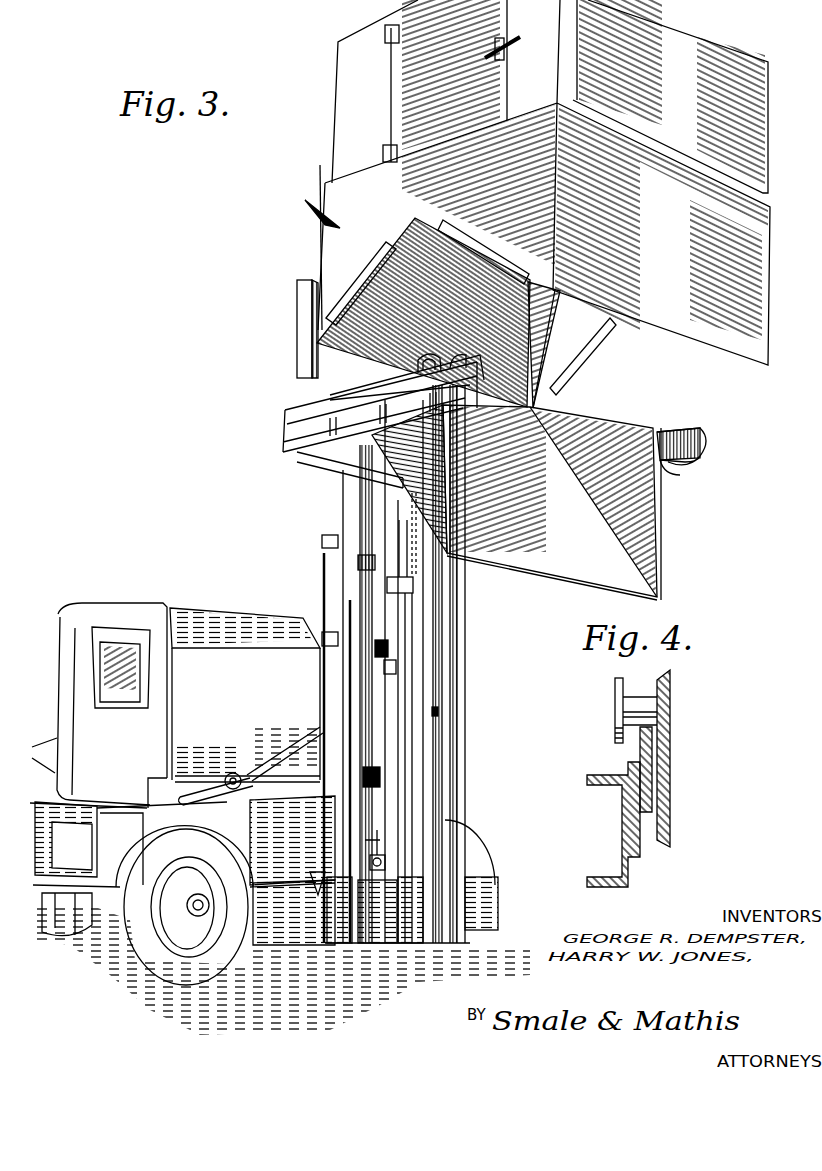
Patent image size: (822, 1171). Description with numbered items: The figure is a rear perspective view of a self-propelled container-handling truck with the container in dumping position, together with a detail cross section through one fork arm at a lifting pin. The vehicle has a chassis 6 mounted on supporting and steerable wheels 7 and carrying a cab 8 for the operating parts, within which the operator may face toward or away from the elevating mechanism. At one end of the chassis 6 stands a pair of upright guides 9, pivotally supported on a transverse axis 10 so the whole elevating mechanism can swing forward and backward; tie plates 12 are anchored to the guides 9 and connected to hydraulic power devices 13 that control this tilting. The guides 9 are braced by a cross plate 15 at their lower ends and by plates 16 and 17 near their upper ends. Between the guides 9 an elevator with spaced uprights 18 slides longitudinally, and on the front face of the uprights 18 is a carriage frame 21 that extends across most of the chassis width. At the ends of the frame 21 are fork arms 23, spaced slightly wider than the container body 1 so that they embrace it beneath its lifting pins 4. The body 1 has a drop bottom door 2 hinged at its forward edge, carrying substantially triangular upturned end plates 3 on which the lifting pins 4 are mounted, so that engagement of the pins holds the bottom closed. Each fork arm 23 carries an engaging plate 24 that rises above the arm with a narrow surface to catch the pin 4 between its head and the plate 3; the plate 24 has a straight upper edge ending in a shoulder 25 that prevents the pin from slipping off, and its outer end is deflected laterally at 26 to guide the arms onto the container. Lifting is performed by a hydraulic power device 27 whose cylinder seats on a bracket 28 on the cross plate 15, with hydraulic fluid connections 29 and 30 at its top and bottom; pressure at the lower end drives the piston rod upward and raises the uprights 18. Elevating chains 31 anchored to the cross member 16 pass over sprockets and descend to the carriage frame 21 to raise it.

In FIG. 3, the body of the container 1 is at (348, 248).
In FIG. 3, the drop bottom door 2 is at (575, 565).
In FIG. 3, the upturned end plates 3 is at (423, 450).
In FIG. 4, the upturned end plates 3 is at (665, 715).
In FIG. 3, the lifting pins 4 is at (423, 360).
In FIG. 4, the lifting pins 4 is at (625, 712).
In FIG. 3, the chassis 6 is at (118, 888).
In FIG. 3, the wheels 7 is at (180, 963).
In FIG. 3, the cab 8 is at (137, 610).
In FIG. 3, the upright guides 9 is at (337, 713).
In FIG. 3, the transverse axis 10 is at (335, 880).
In FIG. 3, the tie plates 12 is at (277, 745).
In FIG. 3, the hydraulic power devices 13 is at (213, 770).
In FIG. 3, the cross plate 15 is at (383, 943).
In FIG. 3, the plate 16 is at (373, 647).
In FIG. 3, the plate 17 is at (375, 562).
In FIG. 3, the uprights 18 is at (350, 503).
In FIG. 3, the carriage frame 21 is at (297, 334).
In FIG. 3, the fork arms 23 is at (290, 430).
In FIG. 4, the fork arms 23 is at (590, 785).
In FIG. 3, the engaging plate 24 is at (672, 430).
In FIG. 4, the engaging plate 24 is at (647, 745).
In FIG. 3, the shoulder 25 is at (458, 360).
In FIG. 3, the laterally deflected outer end 26 is at (702, 447).
In FIG. 3, the power device 27 is at (407, 722).
In FIG. 3, the bracket 28 is at (410, 920).
In FIG. 3, the hydraulic fluid connection 29 is at (390, 670).
In FIG. 3, the hydraulic fluid connection 30 is at (385, 863).
In FIG. 3, the elevating chains 31 is at (410, 522).